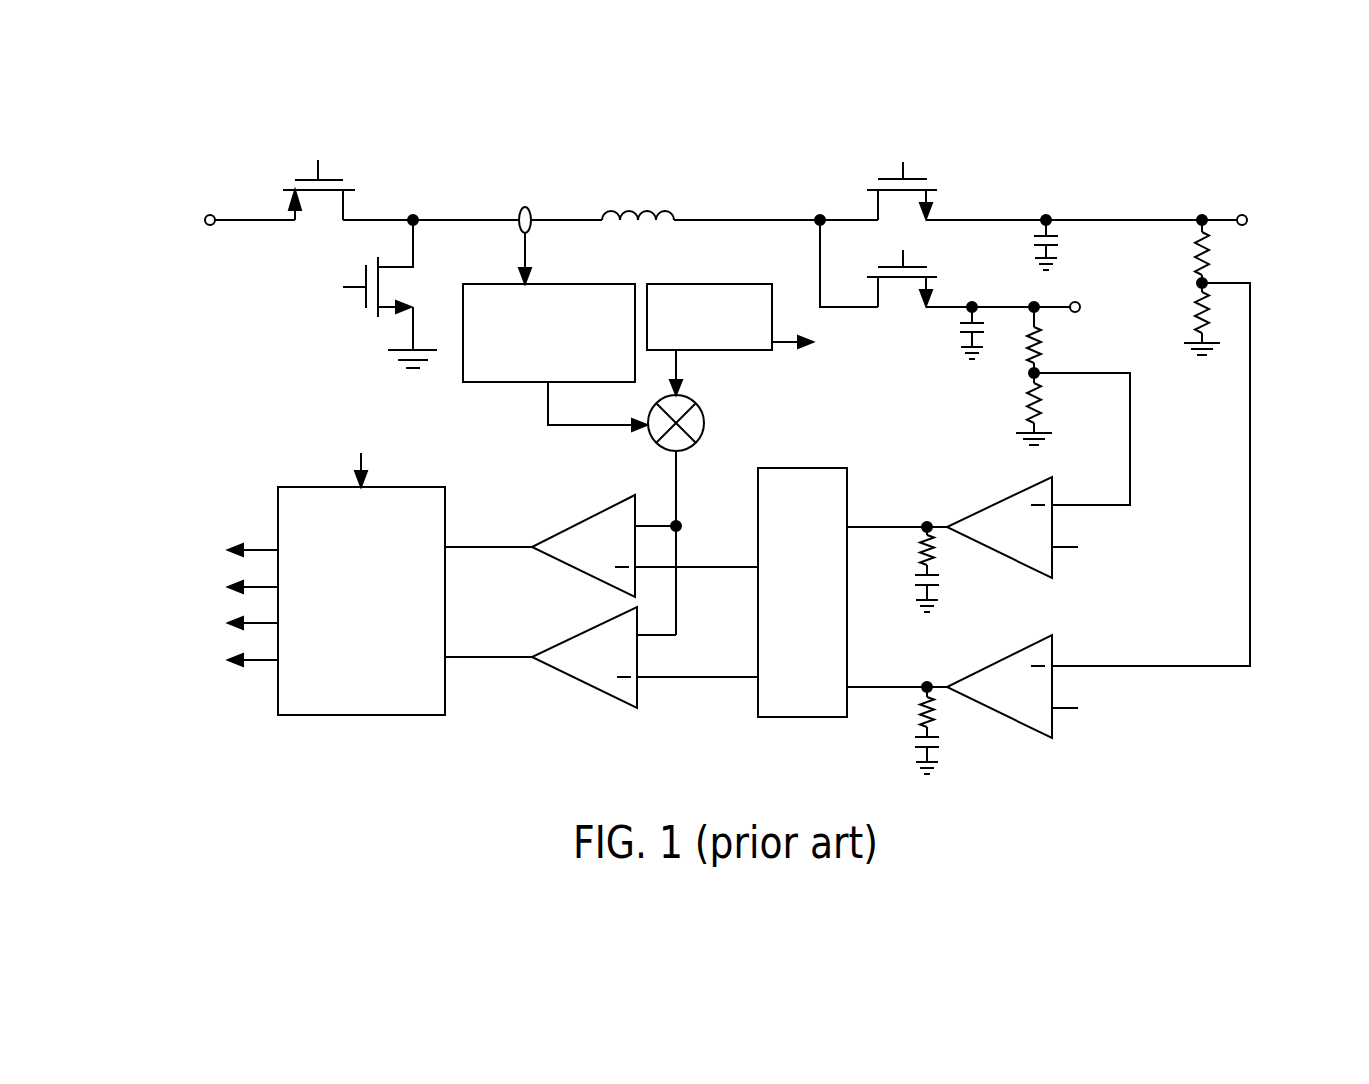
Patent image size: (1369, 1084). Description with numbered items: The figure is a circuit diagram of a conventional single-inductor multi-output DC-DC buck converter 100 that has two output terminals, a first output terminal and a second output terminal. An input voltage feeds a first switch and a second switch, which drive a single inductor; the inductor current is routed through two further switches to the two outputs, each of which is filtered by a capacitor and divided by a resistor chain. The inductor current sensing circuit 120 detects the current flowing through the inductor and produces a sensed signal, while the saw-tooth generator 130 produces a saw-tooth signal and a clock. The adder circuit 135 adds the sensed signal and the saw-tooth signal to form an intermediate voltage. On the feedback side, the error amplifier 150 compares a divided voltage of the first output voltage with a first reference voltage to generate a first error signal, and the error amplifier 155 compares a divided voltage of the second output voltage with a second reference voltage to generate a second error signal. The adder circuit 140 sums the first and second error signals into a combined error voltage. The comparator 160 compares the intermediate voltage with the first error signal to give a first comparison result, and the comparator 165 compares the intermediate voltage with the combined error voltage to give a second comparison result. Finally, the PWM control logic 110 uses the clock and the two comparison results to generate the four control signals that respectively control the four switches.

The SIMO DC-DC buck converter 100 is at (126, 153).
The PWM control logic 110 is at (432, 487).
The inductor current sensing circuit 120 is at (592, 284).
The saw-tooth generator 130 is at (739, 284).
The adder circuit 135 is at (705, 423).
The adder circuit 140 is at (814, 468).
The error amplifier 150 is at (995, 502).
The error amplifier 155 is at (995, 662).
The comparator 160 is at (580, 521).
The comparator 165 is at (580, 632).